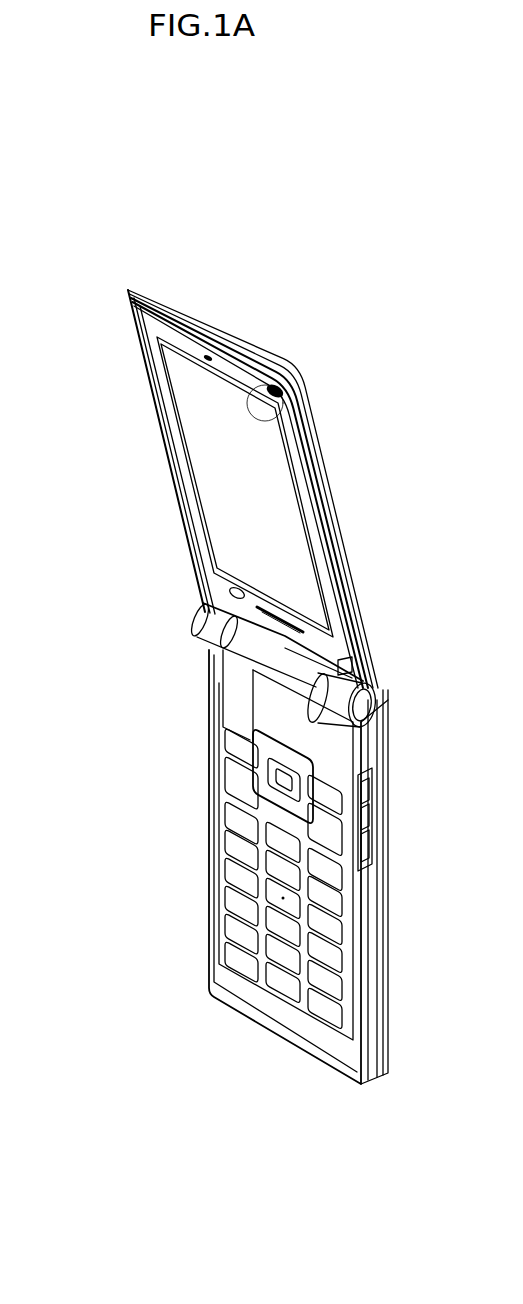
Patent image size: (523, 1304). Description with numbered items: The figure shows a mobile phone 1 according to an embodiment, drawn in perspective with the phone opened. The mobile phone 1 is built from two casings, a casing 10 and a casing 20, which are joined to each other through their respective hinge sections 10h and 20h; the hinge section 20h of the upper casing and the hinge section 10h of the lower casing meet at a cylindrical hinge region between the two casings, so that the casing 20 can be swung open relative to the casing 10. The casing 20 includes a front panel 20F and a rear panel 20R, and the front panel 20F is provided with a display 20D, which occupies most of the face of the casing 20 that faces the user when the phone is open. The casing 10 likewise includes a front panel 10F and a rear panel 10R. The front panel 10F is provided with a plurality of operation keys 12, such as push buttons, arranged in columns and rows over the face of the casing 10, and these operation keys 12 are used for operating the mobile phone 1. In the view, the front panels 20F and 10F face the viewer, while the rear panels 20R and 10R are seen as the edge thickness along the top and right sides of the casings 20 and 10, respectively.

The mobile phone 1 is at (121, 284).
The casing 20 is at (167, 462).
The rear panel 20R is at (212, 323).
The front panel 20F is at (149, 379).
The display 20D is at (276, 392).
The hinge section 20h is at (197, 617).
The casing 10 is at (208, 984).
The hinge section 10h is at (264, 657).
The front panel 10F is at (267, 1010).
The rear panel 10R is at (386, 1076).
The operation keys 12 is at (226, 885).